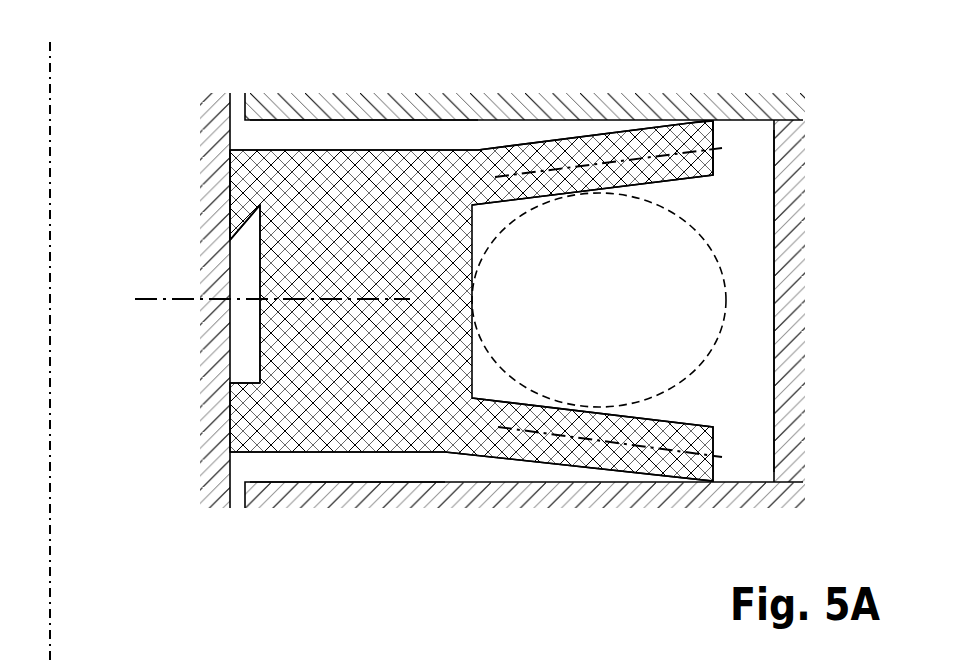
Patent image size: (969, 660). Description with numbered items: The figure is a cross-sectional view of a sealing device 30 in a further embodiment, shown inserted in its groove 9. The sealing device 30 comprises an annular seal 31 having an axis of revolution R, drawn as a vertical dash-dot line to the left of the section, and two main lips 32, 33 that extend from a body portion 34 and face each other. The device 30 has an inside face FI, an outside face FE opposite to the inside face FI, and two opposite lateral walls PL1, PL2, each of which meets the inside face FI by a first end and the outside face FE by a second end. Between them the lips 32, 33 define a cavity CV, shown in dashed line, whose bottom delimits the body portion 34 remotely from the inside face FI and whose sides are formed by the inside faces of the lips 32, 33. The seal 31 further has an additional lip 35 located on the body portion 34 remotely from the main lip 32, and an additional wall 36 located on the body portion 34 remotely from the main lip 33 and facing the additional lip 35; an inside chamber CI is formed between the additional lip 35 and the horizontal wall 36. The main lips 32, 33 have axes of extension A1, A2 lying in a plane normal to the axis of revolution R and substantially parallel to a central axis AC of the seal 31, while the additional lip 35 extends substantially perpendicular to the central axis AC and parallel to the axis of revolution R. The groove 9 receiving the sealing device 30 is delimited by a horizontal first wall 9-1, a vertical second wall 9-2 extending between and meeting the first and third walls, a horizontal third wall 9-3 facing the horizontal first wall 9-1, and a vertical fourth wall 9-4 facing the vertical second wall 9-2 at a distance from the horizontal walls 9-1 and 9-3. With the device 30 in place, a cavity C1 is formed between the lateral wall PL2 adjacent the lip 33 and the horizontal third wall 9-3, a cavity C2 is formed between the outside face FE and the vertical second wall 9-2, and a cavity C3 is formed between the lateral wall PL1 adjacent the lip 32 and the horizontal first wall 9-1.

The axis of revolution R is at (49, 334).
The sealing device 30 is at (467, 283).
The groove 9 is at (504, 305).
The horizontal first wall 9-1 is at (545, 120).
The vertical second wall 9-2 is at (776, 427).
The horizontal third wall 9-3 is at (495, 484).
The vertical fourth wall 9-4 is at (230, 478).
The annular seal 31 is at (693, 116).
The main lip 32 is at (652, 148).
The main lip 33 is at (630, 458).
The body portion 34 is at (363, 173).
The additional lip 35 is at (240, 217).
The additional wall 36 is at (247, 383).
The cavity C1 is at (277, 472).
The cavity C2 is at (740, 269).
The cavity C3 is at (252, 131).
The inside chamber CI is at (245, 277).
The cavity CV is at (727, 317).
The inside face FI is at (224, 178).
The outside face FE is at (718, 160).
The lateral wall PL1 is at (443, 150).
The lateral wall PL2 is at (432, 452).
The axis of extension A1 is at (629, 152).
The axis of extension A2 is at (632, 450).
The central axis AC is at (249, 298).